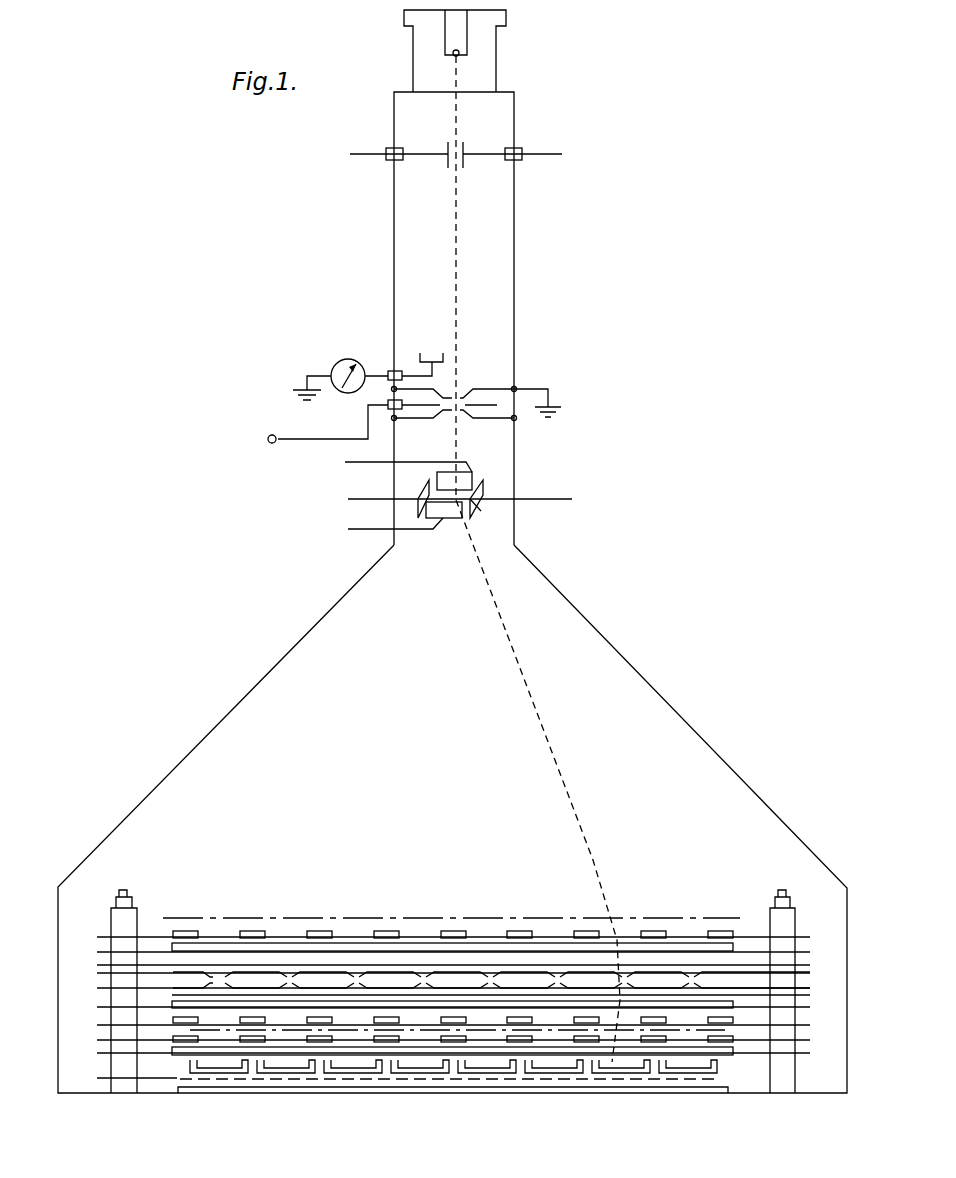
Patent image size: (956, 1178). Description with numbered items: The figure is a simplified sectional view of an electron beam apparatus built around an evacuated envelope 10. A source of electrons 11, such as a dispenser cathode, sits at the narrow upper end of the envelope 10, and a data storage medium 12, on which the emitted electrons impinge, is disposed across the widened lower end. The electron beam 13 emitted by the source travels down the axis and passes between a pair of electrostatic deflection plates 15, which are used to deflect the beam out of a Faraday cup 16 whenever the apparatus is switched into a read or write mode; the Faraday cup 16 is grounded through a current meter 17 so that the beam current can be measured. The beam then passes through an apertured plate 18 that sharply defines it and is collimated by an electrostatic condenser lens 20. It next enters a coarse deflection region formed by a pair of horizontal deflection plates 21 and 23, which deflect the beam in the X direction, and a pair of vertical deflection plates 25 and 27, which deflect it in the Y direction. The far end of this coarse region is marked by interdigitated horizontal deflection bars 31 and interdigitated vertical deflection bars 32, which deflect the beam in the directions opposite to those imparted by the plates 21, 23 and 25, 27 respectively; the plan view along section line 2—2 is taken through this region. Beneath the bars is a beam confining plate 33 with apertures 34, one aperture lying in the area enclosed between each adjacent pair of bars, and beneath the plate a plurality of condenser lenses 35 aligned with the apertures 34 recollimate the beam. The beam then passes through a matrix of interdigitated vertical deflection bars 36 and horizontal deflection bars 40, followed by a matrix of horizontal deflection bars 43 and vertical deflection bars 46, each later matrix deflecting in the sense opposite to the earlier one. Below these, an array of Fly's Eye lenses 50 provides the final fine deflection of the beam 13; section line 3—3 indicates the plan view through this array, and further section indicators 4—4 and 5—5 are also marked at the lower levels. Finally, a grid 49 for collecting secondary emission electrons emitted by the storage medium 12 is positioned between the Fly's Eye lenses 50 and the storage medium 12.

The evacuated envelope 10 is at (568, 599).
The source of electrons 11 is at (467, 35).
The electron beam 13 is at (458, 203).
The electrostatic deflection plates 15 is at (447, 150).
The Faraday cup 16 is at (420, 360).
The current meter 17 is at (353, 359).
The apertured plate 18 is at (480, 388).
The electrostatic condenser lens 20 is at (499, 448).
The horizontal electrostatic deflection plate 21 is at (427, 490).
The horizontal electrostatic deflection plate 23 is at (478, 516).
The vertical deflection plate 25 is at (472, 472).
The vertical deflection plate 27 is at (451, 516).
The section line 2— 2 is at (168, 914).
The section line 3— 3 is at (152, 1026).
The section line 4- 4 is at (587, 1085).
The section line 5- 5 is at (520, 1026).
The data storage medium 12 is at (712, 1088).
The horizontal electrostatic deflection bars 31 is at (386, 930).
The vertical electrostatic deflection bars 32 is at (733, 948).
The beam confining plate 33 is at (432, 967).
The apertures 34 is at (553, 960).
The condenser lenses 35 is at (810, 972).
The interdigitated vertical deflection bars 36 is at (183, 1001).
The interdigitated horizontal deflection bars 40 is at (381, 1010).
The interdigitated horizontal deflection bars 43 is at (447, 1040).
The interdigitated vertical deflection bars 46 is at (175, 1048).
The grid 49 is at (210, 1080).
The Fly's Eye lenses 50 is at (350, 1073).